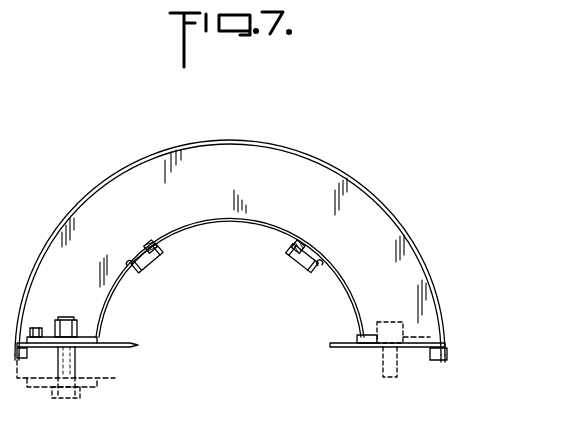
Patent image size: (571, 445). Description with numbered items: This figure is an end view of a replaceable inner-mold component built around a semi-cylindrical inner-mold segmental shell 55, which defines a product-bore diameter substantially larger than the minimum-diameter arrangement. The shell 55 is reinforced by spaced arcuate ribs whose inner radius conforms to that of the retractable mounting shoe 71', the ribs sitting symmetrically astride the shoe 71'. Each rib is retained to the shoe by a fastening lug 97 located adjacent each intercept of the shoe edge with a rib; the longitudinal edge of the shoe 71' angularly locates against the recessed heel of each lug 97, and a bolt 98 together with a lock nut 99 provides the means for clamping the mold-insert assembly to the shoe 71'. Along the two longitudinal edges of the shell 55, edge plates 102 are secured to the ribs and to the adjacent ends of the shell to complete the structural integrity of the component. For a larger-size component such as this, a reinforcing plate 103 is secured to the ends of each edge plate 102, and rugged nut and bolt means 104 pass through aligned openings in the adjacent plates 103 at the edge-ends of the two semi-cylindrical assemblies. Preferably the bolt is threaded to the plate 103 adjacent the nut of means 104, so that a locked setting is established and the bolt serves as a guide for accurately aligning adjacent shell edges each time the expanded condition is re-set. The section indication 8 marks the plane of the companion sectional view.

The section line 8- 8 is at (200, 108).
The semi-cylindrical inner-mold segmental shell 55 is at (305, 152).
The retractable mounting shoe 71' is at (230, 277).
The fastening lug 97 is at (158, 272).
The bolt 98 is at (162, 263).
The lock nut 99 is at (168, 251).
The longitudinal edge plate 102 is at (133, 345).
The reinforcing plate 103 is at (50, 320).
The nut and bolt means 104 is at (77, 370).